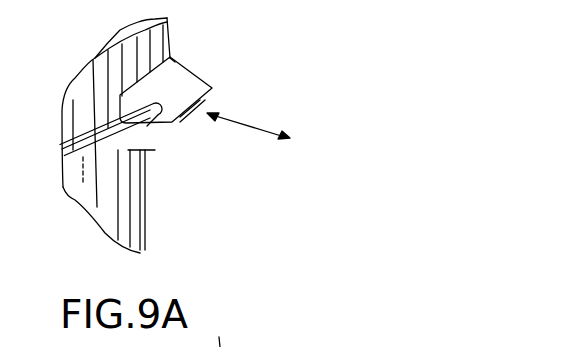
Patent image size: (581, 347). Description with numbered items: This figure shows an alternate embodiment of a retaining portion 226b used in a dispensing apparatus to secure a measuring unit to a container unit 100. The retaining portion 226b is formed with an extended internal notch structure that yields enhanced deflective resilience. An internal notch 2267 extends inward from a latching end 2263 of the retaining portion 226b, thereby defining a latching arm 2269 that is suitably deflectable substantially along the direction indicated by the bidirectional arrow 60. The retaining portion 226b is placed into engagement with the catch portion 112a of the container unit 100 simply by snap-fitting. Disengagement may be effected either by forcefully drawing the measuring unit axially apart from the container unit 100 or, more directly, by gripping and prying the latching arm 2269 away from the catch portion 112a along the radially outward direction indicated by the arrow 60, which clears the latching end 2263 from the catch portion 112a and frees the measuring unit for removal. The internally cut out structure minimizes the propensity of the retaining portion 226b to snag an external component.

The catch portion 112a is at (88, 160).
The retaining portion 226b is at (183, 81).
The internal notch 2267 is at (150, 113).
The latching end 2263 is at (122, 150).
The latching arm 2269 is at (153, 151).
The container unit 100 is at (180, 184).
The bidirectional arrow 60 is at (247, 113).